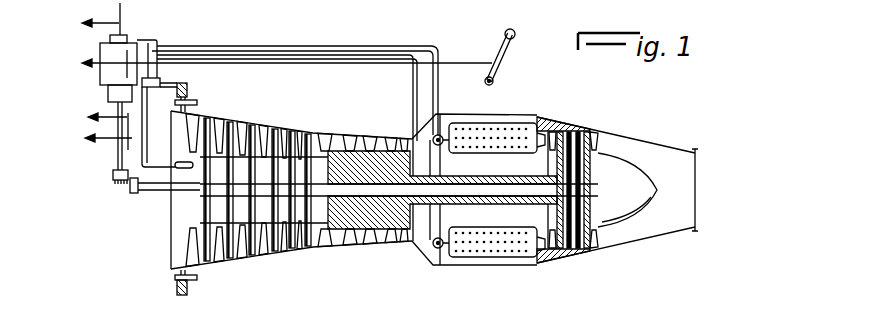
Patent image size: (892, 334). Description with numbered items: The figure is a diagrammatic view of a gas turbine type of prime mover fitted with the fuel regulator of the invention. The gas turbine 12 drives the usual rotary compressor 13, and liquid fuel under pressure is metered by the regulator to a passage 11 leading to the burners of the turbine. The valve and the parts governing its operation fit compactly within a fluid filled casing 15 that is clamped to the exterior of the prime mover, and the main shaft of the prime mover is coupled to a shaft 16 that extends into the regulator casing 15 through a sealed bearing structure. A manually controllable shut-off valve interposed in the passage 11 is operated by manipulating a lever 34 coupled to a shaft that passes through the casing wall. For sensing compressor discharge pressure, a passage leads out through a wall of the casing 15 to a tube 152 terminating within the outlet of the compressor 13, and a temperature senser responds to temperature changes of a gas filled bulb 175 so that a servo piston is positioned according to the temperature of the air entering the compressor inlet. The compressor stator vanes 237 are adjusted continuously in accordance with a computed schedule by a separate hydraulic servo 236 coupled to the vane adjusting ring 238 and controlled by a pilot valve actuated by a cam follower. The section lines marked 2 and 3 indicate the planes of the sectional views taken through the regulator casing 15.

The section line for FIG. 2 is at (97, 103).
The section line for FIG. 3 is at (93, 69).
The passage 11 is at (376, 48).
The gas turbine 12 is at (583, 116).
The rotary compressor 13 is at (298, 266).
The casing 15 is at (100, 78).
The shaft 16 is at (117, 163).
The lever 34 is at (505, 36).
The tube 152 is at (414, 93).
The bulb 175 is at (183, 174).
The hydraulic servo 236 is at (165, 72).
The stator vanes 237 is at (221, 262).
The vane adjusting ring 238 is at (190, 92).